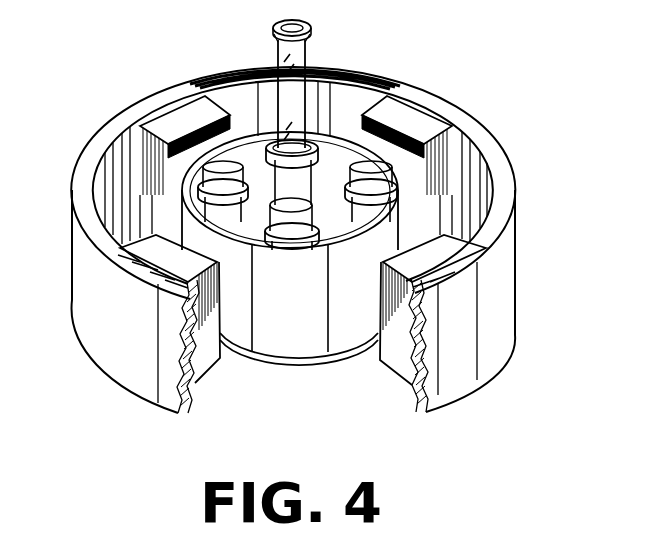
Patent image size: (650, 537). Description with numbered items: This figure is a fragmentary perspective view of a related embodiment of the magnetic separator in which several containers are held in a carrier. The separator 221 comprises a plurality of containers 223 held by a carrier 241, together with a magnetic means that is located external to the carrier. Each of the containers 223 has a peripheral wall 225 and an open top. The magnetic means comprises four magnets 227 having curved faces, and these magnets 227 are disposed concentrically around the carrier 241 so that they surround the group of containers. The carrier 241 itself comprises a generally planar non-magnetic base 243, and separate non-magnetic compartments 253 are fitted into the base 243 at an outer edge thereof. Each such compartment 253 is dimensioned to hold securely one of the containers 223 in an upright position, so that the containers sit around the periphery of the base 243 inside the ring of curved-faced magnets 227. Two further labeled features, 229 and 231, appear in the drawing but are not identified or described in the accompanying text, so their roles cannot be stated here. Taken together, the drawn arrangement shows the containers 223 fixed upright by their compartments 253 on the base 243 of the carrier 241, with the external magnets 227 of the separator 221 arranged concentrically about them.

The separator 221 is at (517, 168).
The containers 223 is at (306, 60).
The peripheral wall 225 is at (272, 23).
The magnets 227 is at (163, 120).
The ring top surface 229 is at (110, 142).
The housing wall 231 is at (518, 290).
The carrier 241 is at (291, 323).
The base 243 is at (310, 358).
The compartments 253 is at (272, 143).